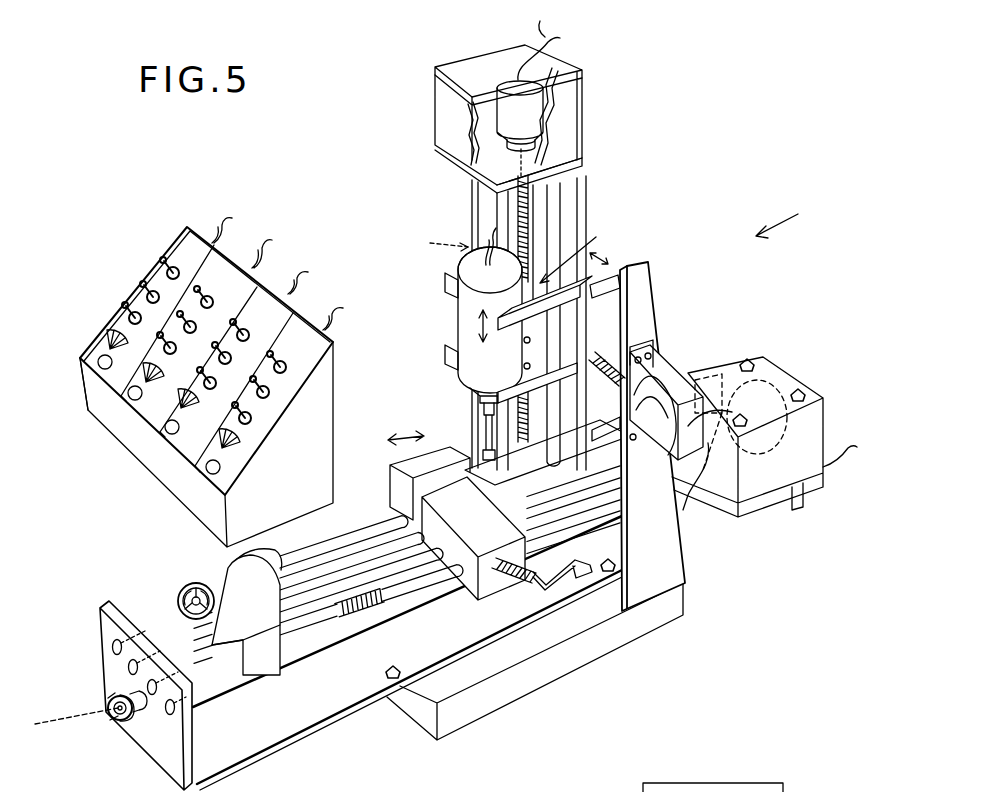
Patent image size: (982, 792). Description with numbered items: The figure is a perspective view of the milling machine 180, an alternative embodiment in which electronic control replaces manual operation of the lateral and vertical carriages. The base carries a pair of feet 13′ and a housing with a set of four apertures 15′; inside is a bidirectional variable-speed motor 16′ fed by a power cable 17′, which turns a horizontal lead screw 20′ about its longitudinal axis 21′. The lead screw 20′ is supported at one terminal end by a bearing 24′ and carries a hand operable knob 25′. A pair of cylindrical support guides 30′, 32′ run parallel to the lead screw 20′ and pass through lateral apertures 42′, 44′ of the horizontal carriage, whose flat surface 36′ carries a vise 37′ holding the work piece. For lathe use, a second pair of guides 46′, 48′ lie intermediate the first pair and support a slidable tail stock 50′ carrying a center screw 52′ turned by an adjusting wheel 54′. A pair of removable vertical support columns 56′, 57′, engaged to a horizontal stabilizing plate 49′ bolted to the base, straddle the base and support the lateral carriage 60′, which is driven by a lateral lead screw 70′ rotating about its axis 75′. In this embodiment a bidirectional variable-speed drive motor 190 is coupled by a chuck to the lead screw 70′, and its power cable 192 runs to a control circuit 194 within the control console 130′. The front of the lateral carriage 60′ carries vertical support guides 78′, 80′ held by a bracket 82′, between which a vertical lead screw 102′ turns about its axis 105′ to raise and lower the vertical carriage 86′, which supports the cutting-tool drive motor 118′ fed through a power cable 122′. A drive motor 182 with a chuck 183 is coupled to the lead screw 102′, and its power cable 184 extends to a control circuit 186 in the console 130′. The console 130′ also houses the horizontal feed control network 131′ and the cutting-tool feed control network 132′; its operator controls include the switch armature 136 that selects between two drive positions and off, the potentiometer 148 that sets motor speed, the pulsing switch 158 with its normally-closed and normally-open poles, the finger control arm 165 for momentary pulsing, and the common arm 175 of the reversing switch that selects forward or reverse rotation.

The control console 130′ is at (193, 204).
The common arm of reversing switch 175 is at (170, 266).
The switch armature 136 is at (150, 290).
The pulsing switch 158 is at (131, 313).
The potentiometer 148 is at (110, 344).
The finger control common arm 165 is at (99, 357).
The horizontal feed control network 131′ is at (88, 410).
The control circuit 194 is at (126, 408).
The control circuit 186 is at (158, 440).
The cutting-tool feed control network 132′ is at (210, 478).
The bracket 82′ is at (440, 154).
The drive motor 182 is at (512, 82).
The chuck 183 is at (515, 150).
The power cable 184 is at (252, 270).
The axis of vertical lead screw 105′ is at (482, 184).
The vertical support column 78′ is at (500, 204).
The vertical support column 80′ is at (556, 190).
The vertical lead screw 102′ is at (532, 214).
The vertical carriage 86′ is at (578, 249).
The lateral carriage 60′ is at (620, 270).
The cutting-tool drive motor 118′ is at (458, 322).
The vertical support column 57′ is at (482, 436).
The power cable 122′ is at (458, 262).
The axis of lateral lead screw 75′ is at (434, 241).
The lateral lead screw 70′ is at (610, 366).
The drive motor 190 is at (660, 386).
The feet 13′ is at (803, 505).
The apertures 15′ is at (750, 362).
The motor 16′ is at (778, 388).
The power cable 192 is at (300, 272).
The power cable 17′ is at (838, 458).
The milling machine 180 is at (790, 217).
The cylindrical support guide 30′ is at (348, 622).
The vertical support column 56′ is at (668, 572).
The horizontal stabilizing plate 49′ is at (410, 712).
The cylindrical support guide 32′ is at (332, 556).
The cylindrical support guide 48′ is at (352, 560).
The center screw 52′ is at (282, 562).
The cylindrical support guide 46′ is at (310, 630).
The lead screw 20′ is at (381, 604).
The bearing 24′ is at (146, 712).
The hand operable knob 25′ is at (122, 722).
The longitudinal axis 21′ is at (76, 737).
The tail stock 50′ is at (258, 655).
The adjusting wheel 54′ is at (193, 585).
The lateral aperture 44′ is at (402, 510).
The vise 37′ is at (412, 424).
The lateral aperture 42′ is at (470, 590).
The horizontal flat surface 36′ is at (500, 590).